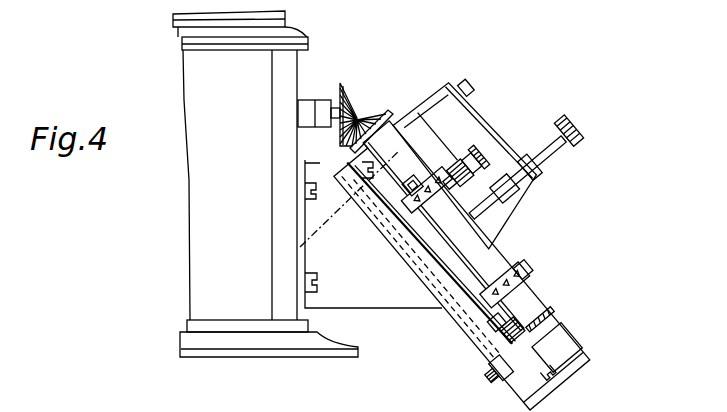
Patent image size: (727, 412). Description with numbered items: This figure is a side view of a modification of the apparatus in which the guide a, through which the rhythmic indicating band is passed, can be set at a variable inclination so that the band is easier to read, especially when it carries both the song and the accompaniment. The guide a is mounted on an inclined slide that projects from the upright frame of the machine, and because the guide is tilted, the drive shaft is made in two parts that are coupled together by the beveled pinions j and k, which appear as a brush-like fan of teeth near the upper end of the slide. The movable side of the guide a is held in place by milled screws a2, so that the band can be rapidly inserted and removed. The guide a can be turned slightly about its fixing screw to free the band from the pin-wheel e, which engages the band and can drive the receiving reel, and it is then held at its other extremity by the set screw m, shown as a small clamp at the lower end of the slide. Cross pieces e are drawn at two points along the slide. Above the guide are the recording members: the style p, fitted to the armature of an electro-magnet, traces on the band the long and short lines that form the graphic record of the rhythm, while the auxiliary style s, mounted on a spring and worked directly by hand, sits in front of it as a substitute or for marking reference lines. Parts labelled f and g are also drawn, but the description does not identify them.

The guide a is at (427, 183).
The milled screws a2 is at (517, 333).
The pin-wheel e is at (430, 196).
The bearings f is at (334, 107).
The bar g is at (540, 283).
The beveled pinion j is at (382, 108).
The beveled pinion k is at (350, 112).
The set screw m is at (492, 383).
The style p is at (452, 166).
The auxiliary style s is at (487, 203).